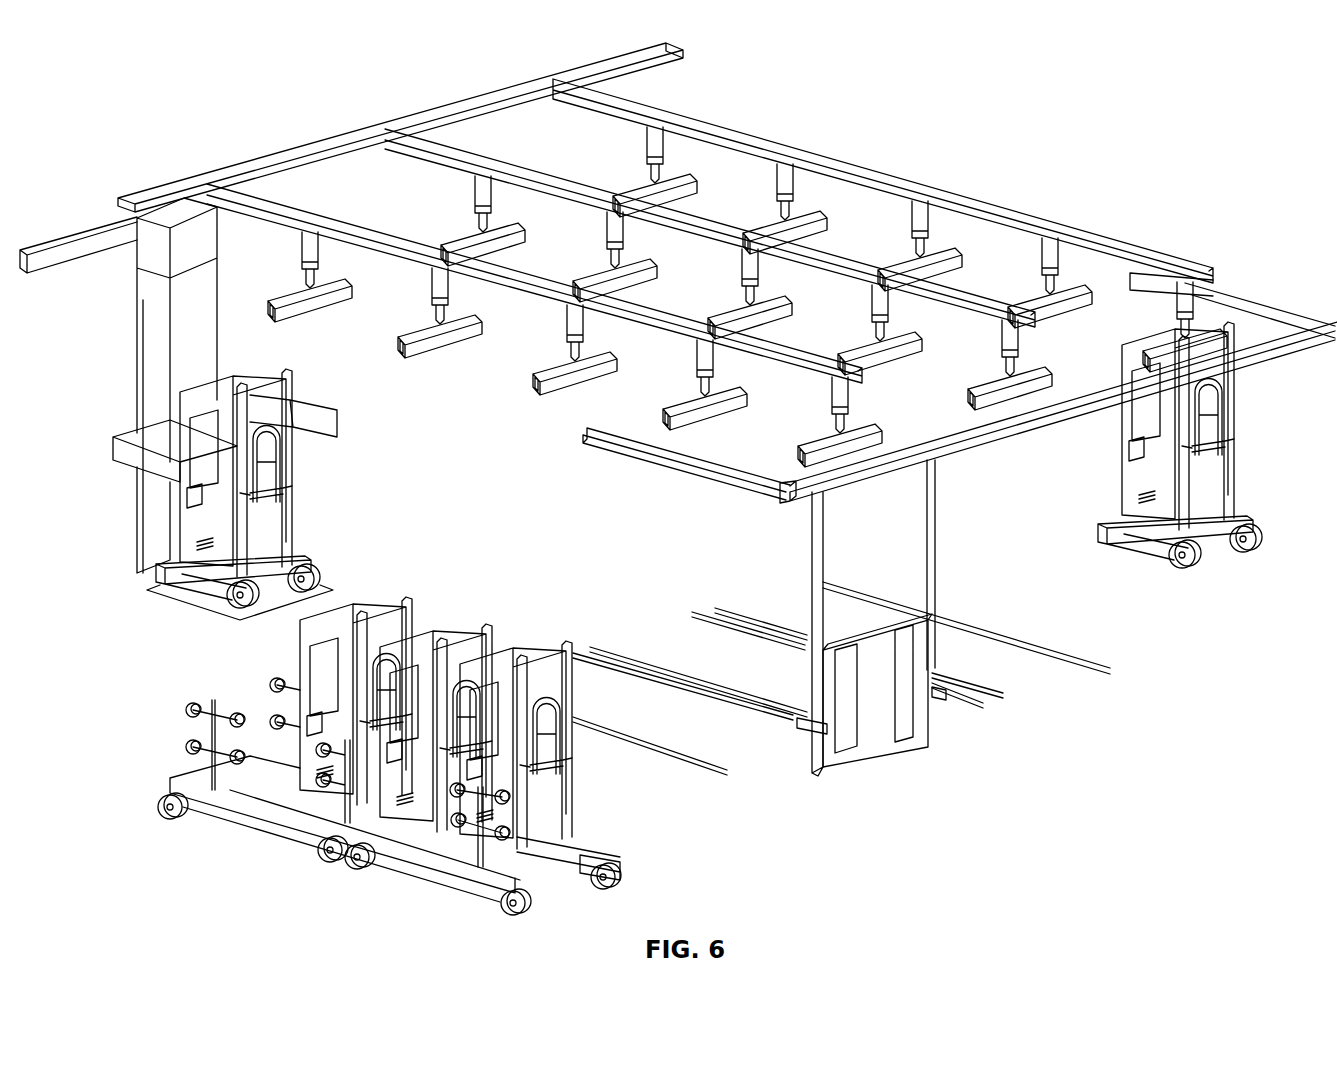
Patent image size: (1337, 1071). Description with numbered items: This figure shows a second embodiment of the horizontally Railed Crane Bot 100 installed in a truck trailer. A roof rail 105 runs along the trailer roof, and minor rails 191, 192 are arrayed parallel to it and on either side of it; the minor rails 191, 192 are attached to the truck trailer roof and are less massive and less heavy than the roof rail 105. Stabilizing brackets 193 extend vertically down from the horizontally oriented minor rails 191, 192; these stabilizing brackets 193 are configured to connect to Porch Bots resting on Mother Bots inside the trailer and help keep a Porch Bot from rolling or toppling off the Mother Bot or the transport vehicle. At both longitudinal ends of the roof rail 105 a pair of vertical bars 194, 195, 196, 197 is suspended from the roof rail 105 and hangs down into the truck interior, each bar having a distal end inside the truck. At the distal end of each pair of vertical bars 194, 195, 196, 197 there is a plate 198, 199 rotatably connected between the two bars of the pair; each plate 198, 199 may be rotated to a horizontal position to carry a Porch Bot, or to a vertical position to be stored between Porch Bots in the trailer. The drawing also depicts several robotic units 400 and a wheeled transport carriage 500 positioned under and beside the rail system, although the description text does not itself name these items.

The Railed Crane Bot 100 is at (1013, 180).
The roof rail 105 is at (285, 157).
The minor rail 191 is at (710, 230).
The minor rail 192 is at (400, 240).
The stabilizing bracket 193 is at (337, 303).
The vertical bar 194 is at (841, 647).
The vertical bar 195 is at (817, 572).
The vertical bar 196 is at (942, 618).
The vertical bar 197 is at (937, 510).
The plate 198 is at (948, 690).
The plate 199 is at (927, 720).
The mobile charging robot 400 is at (257, 380).
The transport cart 500 is at (172, 782).